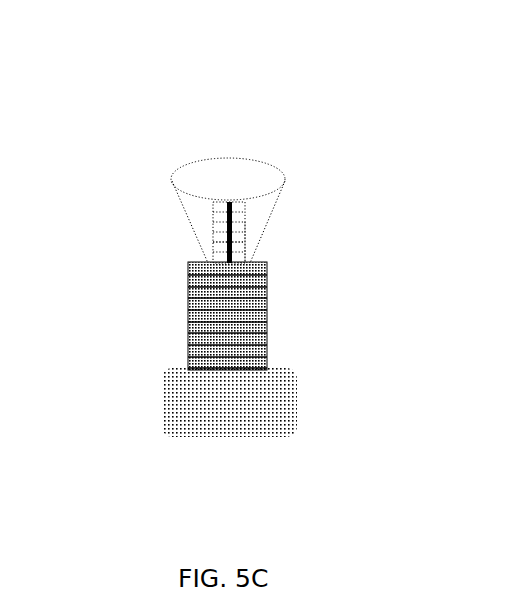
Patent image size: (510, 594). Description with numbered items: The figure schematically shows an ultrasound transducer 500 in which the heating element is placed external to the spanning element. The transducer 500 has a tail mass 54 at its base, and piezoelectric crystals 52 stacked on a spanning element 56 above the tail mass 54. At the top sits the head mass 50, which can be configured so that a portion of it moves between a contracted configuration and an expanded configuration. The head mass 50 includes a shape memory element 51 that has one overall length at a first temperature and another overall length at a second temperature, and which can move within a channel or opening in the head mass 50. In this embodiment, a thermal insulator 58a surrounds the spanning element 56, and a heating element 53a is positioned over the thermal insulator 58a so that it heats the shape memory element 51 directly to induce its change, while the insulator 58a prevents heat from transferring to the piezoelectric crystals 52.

The ultrasound transducer 500 is at (259, 117).
The head mass 50 is at (280, 173).
The shape memory element 51 is at (245, 220).
The piezoelectric crystals 52 is at (263, 320).
The heating element 53a is at (227, 242).
The tail mass 54 is at (275, 422).
The spanning element 56 is at (225, 212).
The thermal insulator 58a is at (248, 243).